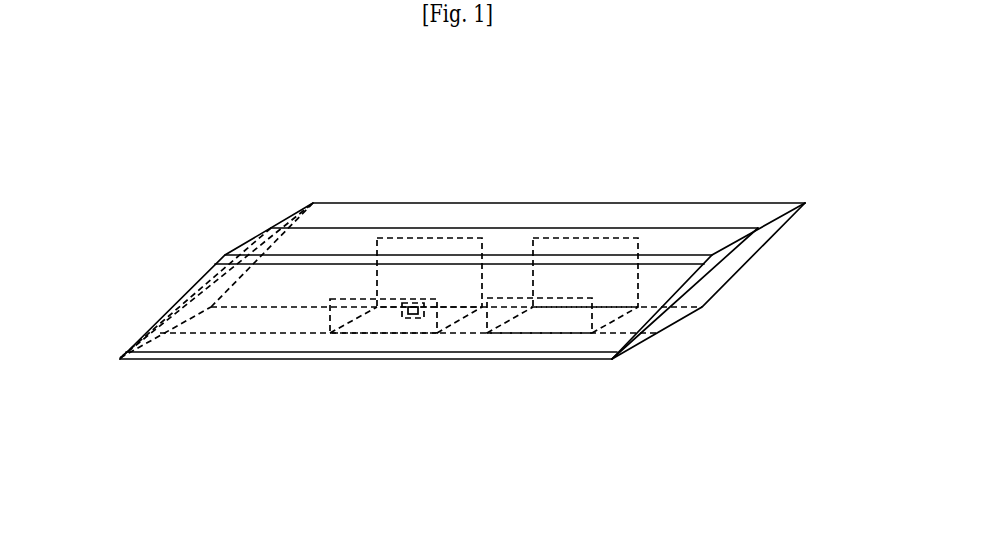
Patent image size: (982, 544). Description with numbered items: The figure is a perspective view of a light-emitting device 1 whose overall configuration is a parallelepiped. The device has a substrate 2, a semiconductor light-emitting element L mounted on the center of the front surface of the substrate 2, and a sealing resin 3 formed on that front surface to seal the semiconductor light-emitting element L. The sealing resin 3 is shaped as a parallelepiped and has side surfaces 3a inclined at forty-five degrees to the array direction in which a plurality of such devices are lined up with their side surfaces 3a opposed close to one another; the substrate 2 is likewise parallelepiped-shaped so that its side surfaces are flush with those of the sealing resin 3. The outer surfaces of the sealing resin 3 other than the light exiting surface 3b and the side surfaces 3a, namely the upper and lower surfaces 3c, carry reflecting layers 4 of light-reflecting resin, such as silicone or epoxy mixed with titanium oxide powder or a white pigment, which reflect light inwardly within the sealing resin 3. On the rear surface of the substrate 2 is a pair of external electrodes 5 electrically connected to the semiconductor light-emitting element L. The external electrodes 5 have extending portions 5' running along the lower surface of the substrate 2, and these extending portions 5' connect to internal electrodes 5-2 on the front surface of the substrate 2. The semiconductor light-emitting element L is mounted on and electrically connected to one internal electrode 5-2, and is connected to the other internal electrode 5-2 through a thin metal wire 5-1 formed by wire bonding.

The light-emitting device 1 is at (681, 165).
The substrate 2 is at (692, 218).
The sealing resin 3 is at (452, 345).
The side surfaces 3a is at (200, 288).
The light exiting surface 3b is at (252, 342).
The upper and lower surfaces 3c is at (330, 243).
The reflecting layers 4 is at (508, 263).
The external electrodes 5 is at (507, 214).
The thin metal wire 5-1 is at (482, 307).
The internal electrodes 5-2 is at (333, 305).
The extending portions 5' is at (475, 388).
The semiconductor light-emitting element L is at (405, 303).